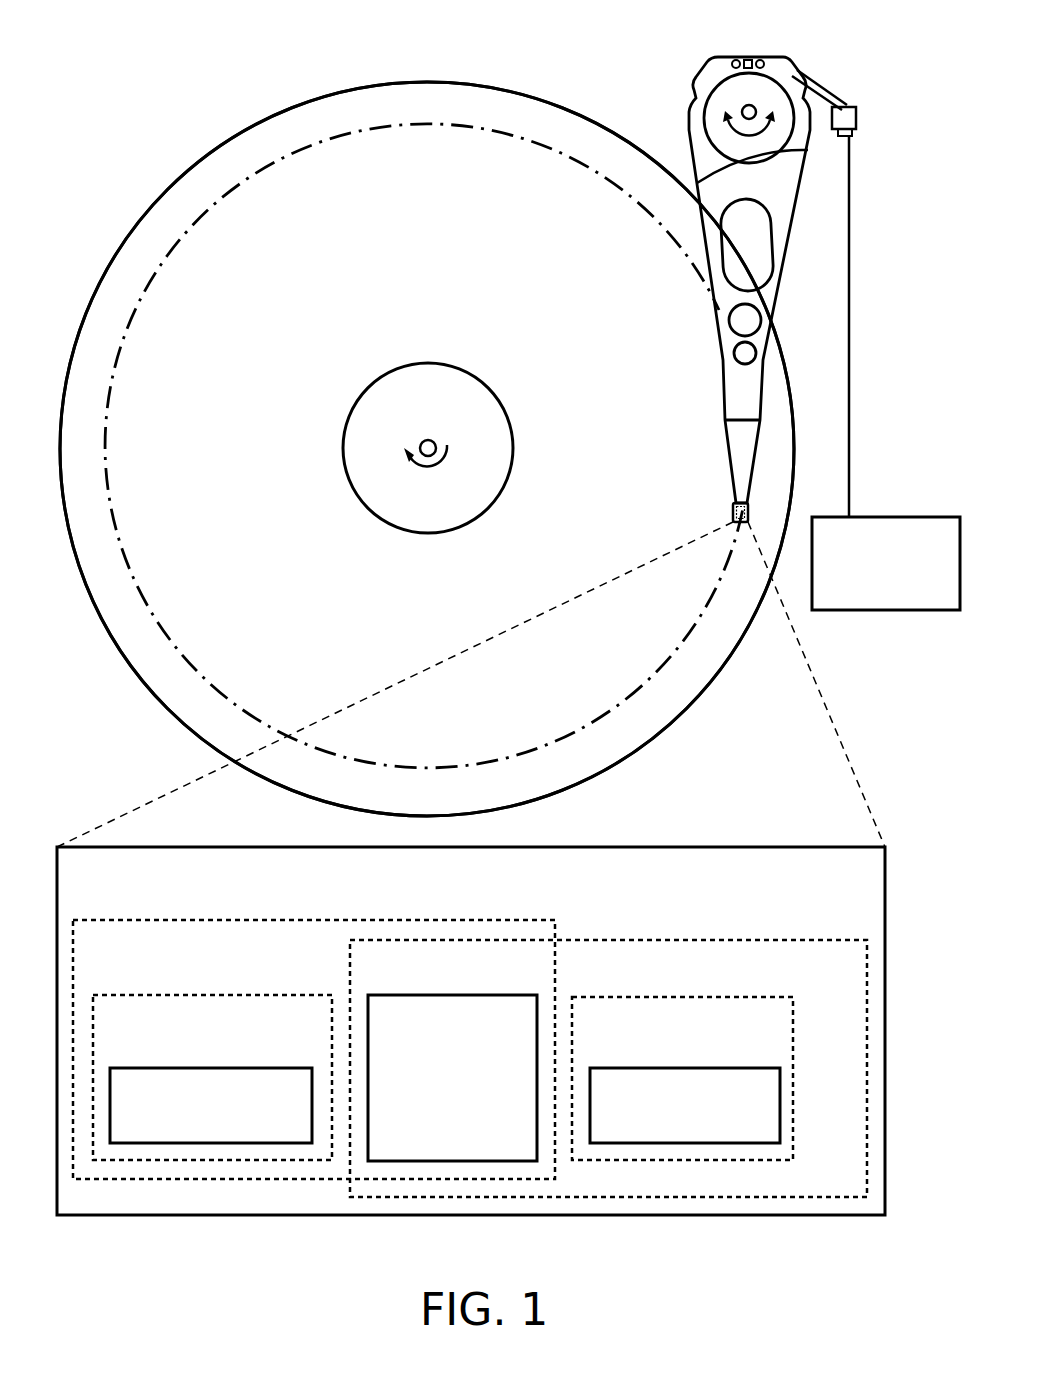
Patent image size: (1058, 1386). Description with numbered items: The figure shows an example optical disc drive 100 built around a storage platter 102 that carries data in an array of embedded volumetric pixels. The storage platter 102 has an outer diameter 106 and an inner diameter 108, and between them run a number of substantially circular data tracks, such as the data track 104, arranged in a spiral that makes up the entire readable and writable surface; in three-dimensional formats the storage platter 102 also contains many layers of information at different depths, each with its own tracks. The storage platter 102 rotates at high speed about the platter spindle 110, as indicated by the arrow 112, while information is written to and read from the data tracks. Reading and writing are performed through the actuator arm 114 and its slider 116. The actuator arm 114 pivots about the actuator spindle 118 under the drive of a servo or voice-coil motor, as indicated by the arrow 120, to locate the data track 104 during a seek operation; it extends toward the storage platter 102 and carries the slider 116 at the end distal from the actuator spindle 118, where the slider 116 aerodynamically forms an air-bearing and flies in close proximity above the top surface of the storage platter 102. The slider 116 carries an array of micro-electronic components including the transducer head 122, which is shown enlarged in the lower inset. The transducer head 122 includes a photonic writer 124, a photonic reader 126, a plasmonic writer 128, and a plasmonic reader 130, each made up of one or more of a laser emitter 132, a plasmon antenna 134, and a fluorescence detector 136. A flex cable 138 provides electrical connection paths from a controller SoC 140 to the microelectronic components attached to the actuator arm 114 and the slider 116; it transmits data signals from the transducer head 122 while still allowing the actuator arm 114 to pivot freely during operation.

The optical disc drive 100 is at (135, 116).
The storage platter 102 is at (450, 197).
The data track 104 is at (700, 612).
The outer diameter 106 is at (360, 82).
The inner diameter 108 is at (346, 418).
The platter spindle 110 is at (421, 442).
The arrow 112 is at (445, 458).
The actuator arm 114 is at (794, 197).
The slider 116 is at (735, 508).
The actuator spindle 118 is at (742, 107).
The arrow 120 is at (768, 120).
The transducer head 122 is at (492, 912).
The photonic writer 124 is at (704, 1062).
The photonic reader 126 is at (859, 1006).
The plasmonic writer 128 is at (234, 1059).
The plasmonic reader 130 is at (127, 986).
The laser emitter 132 is at (706, 1134).
The plasmon antenna 134 is at (233, 1131).
The fluorescence detector 136 is at (473, 1119).
The flex cable 138 is at (849, 474).
The controller SoC 140 is at (908, 604).